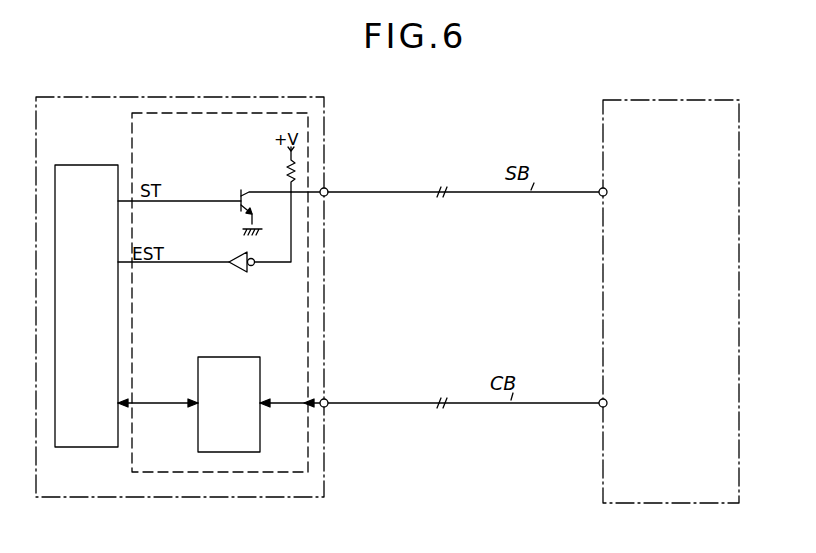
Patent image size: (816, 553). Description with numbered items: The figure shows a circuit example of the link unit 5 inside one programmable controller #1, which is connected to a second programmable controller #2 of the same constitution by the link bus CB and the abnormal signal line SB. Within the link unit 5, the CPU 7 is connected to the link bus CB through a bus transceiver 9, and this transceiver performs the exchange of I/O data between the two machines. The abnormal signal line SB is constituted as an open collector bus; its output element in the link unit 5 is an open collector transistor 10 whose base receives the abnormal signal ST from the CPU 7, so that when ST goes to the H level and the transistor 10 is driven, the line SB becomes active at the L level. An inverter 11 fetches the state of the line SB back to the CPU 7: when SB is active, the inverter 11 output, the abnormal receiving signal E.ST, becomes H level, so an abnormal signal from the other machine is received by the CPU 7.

The programmable controller # 1 is at (176, 497).
The programmable controller # 2 is at (677, 495).
The link unit 5 is at (308, 340).
The CPU 7 is at (97, 165).
The bus transceiver 9 is at (198, 373).
The open collector transistor 10 is at (233, 209).
The inverter 11 is at (237, 270).